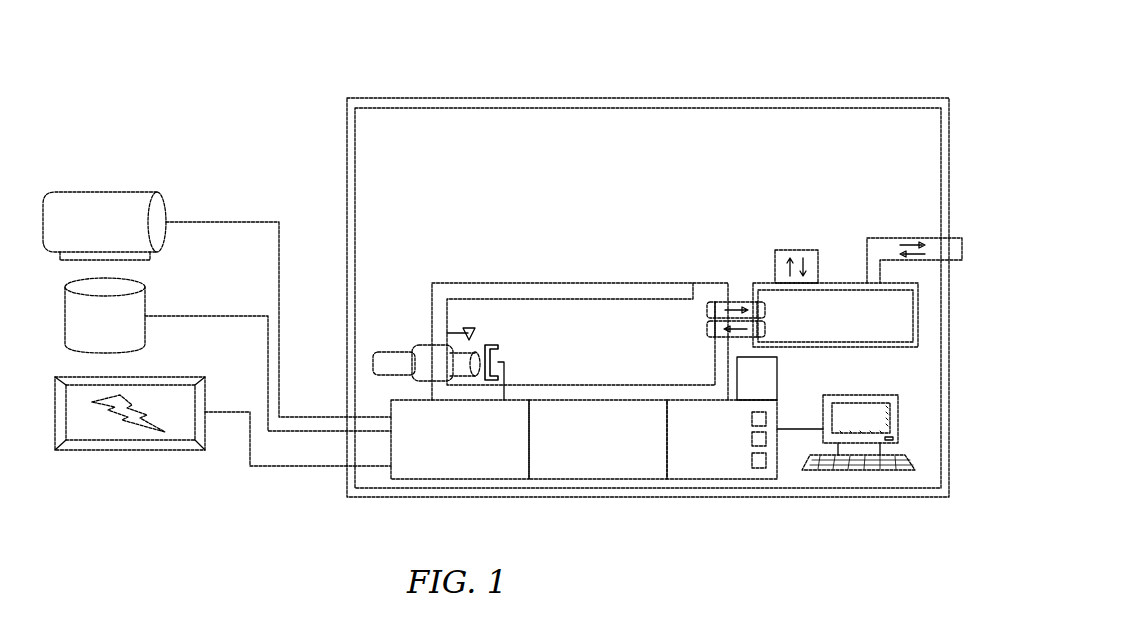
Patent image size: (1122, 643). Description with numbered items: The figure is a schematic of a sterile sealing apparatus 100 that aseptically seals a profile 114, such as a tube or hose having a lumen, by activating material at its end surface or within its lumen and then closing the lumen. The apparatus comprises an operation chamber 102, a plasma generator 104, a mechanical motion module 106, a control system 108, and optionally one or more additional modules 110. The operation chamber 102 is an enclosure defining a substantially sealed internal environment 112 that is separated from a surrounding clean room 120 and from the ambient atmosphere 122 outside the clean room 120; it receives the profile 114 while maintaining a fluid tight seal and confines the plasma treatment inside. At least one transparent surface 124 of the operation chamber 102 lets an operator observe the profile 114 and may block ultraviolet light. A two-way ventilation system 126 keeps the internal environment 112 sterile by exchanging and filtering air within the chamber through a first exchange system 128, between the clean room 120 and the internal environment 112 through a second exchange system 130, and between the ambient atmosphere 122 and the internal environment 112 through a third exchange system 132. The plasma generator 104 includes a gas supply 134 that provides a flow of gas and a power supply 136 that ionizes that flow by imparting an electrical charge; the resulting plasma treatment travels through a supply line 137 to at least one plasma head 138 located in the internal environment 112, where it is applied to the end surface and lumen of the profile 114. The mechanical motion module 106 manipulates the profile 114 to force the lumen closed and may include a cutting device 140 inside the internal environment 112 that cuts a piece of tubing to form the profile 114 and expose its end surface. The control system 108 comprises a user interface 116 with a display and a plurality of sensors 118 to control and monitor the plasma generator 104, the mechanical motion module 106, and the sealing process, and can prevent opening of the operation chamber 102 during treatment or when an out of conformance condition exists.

The sterile sealing apparatus 100 is at (843, 47).
The operation chamber 102 is at (704, 276).
The plasma generator 104 is at (444, 450).
The mechanical motion module 106 is at (583, 450).
The control system 108 is at (705, 450).
The additional modules 110 is at (742, 388).
The internal environment 112 is at (487, 304).
The profile 114 is at (405, 352).
The user interface 116 is at (870, 395).
The sensors 118 is at (768, 420).
The clean room 120 is at (414, 155).
The ambient atmosphere 122 is at (633, 88).
The transparent surface 124 is at (563, 282).
The two-way ventilation system 126 is at (820, 321).
The first exchange system 128 is at (748, 306).
The second exchange system 130 is at (803, 248).
The third exchange system 132 is at (900, 237).
The gas supply 134 is at (88, 230).
The power supply 136 is at (136, 452).
The supply line 137 is at (507, 379).
The plasma head 138 is at (498, 348).
The cutting device 140 is at (470, 328).